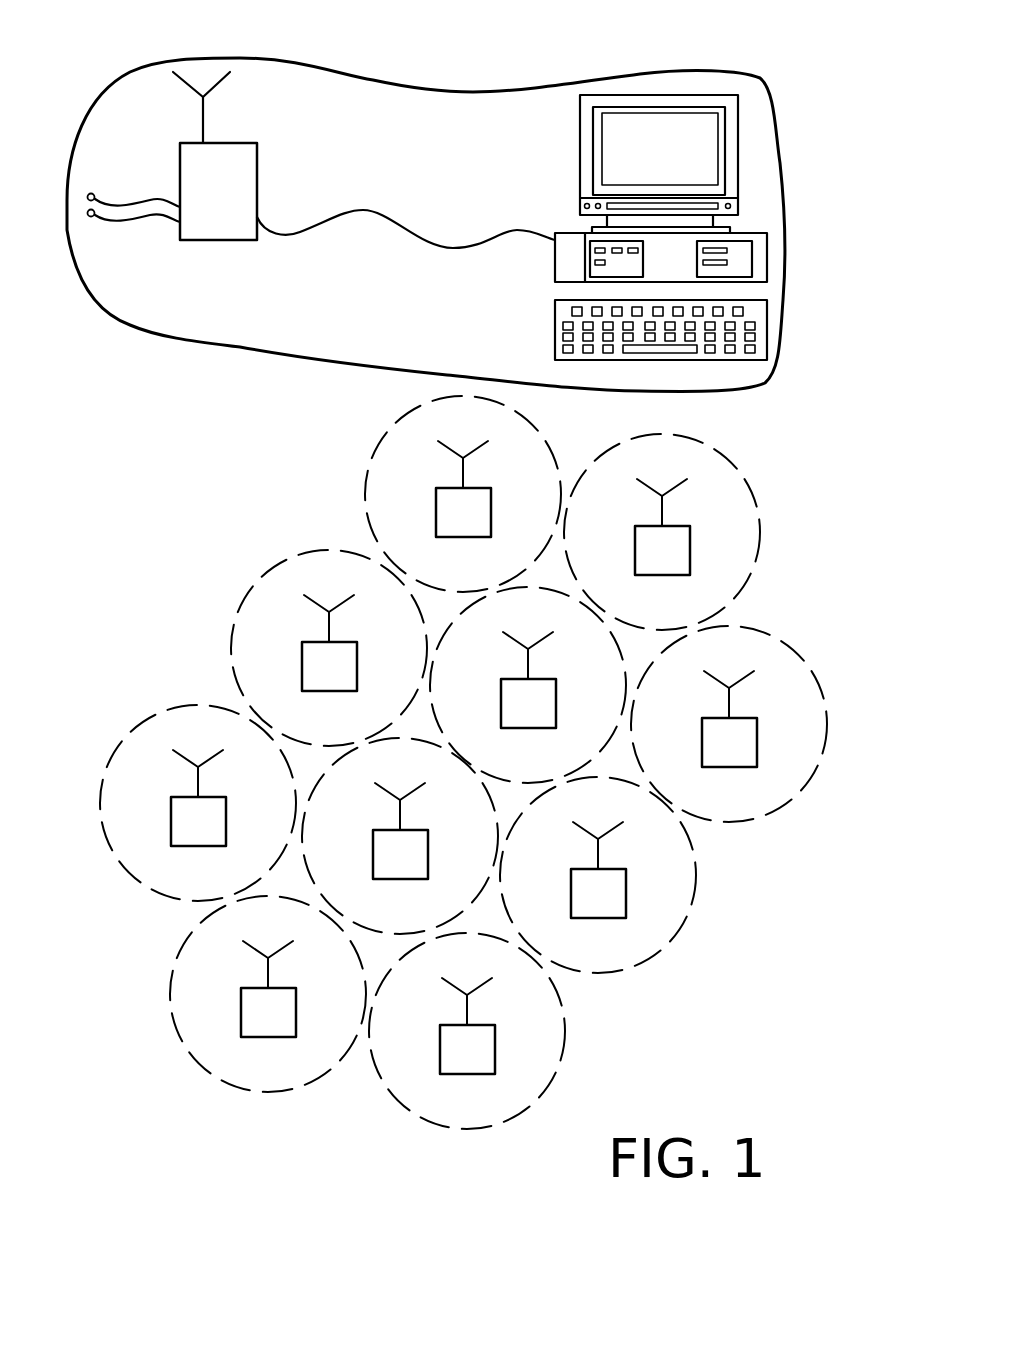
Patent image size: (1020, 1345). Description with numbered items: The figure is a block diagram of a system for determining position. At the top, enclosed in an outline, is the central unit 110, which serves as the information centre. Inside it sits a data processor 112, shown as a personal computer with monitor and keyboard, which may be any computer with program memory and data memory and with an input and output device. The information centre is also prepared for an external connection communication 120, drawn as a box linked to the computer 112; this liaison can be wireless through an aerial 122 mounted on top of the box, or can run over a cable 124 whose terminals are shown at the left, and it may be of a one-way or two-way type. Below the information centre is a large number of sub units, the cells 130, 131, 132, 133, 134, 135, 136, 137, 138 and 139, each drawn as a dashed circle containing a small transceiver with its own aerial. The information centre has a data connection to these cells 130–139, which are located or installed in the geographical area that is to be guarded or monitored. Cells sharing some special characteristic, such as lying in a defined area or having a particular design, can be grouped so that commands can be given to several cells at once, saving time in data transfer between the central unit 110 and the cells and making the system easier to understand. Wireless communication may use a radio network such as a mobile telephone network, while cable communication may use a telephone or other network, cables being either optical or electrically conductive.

The central unit 110 is at (780, 163).
The data processor 112 is at (767, 258).
The external connection communication 120 is at (197, 240).
The aerial 122 is at (203, 107).
The cable 124 is at (91, 225).
The cell 130 is at (112, 855).
The cell 131 is at (258, 580).
The cell 132 is at (365, 502).
The cell 133 is at (760, 555).
The cell 134 is at (763, 817).
The cell 135 is at (605, 752).
The cell 136 is at (657, 953).
The cell 137 is at (475, 907).
The cell 138 is at (382, 1082).
The cell 139 is at (170, 1000).